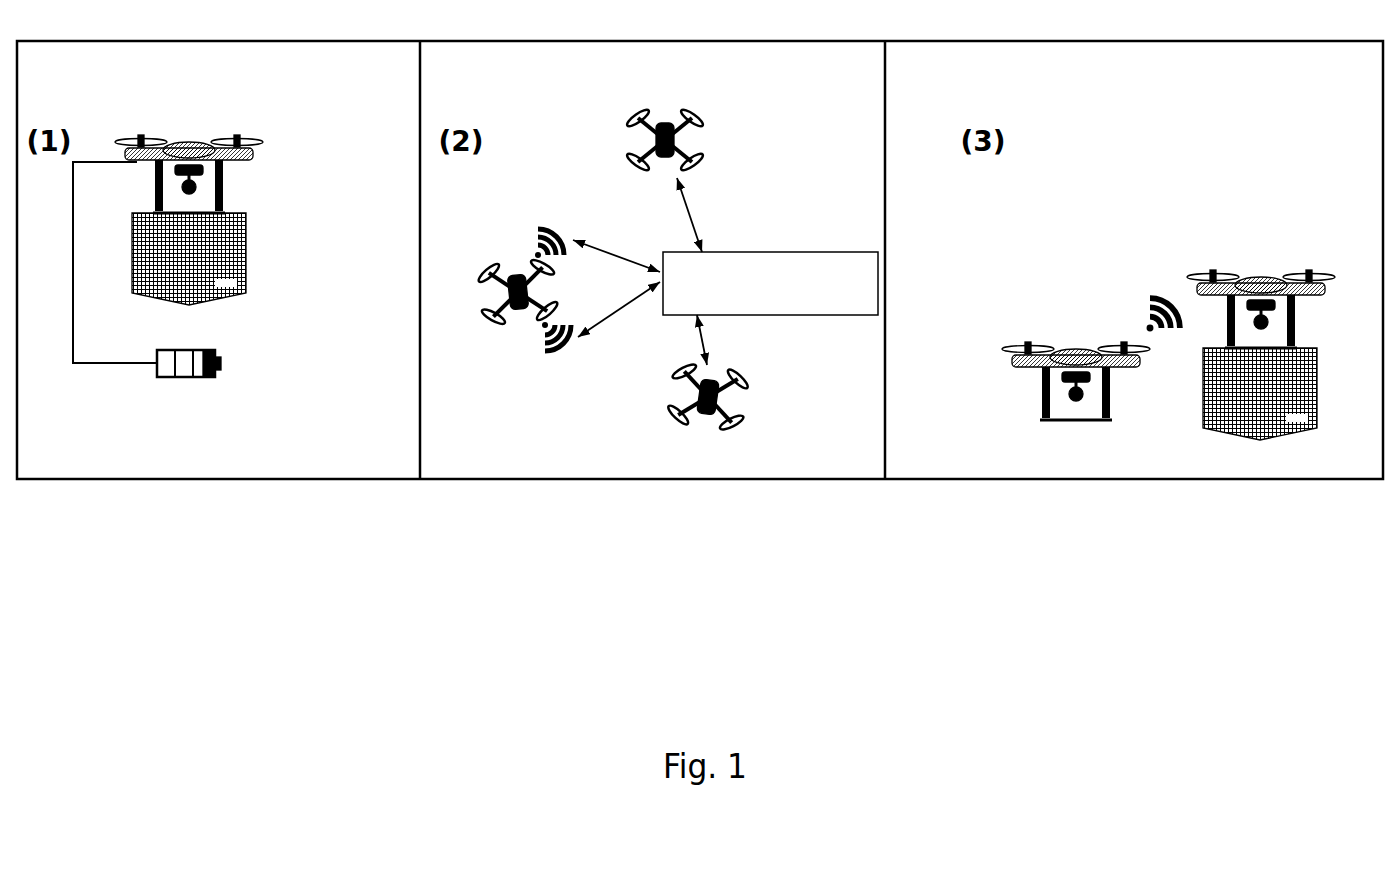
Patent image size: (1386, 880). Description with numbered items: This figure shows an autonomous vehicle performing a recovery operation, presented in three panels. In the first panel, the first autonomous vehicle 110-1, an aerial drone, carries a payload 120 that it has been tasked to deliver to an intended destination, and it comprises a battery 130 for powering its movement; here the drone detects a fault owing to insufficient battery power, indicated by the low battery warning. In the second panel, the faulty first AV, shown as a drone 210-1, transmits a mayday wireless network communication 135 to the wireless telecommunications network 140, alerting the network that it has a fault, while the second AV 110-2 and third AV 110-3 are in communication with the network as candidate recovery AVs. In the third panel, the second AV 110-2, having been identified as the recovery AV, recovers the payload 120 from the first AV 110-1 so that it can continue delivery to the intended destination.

The first autonomous vehicle 110-1 is at (260, 141).
The second autonomous vehicle 110-2 is at (680, 150).
The third autonomous vehicle 110-3 is at (715, 407).
The payload 120 is at (233, 267).
The battery 130 is at (222, 373).
The wireless network communication 135 is at (558, 257).
The wireless telecommunications network 140 is at (768, 252).
The unmanned aerial vehicle (drone) 210-1 is at (500, 317).